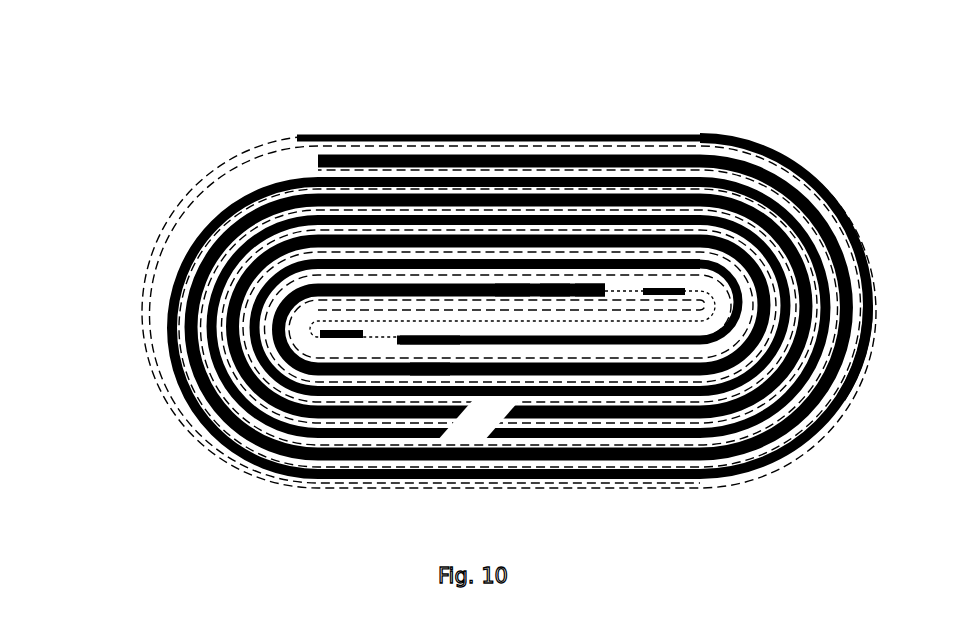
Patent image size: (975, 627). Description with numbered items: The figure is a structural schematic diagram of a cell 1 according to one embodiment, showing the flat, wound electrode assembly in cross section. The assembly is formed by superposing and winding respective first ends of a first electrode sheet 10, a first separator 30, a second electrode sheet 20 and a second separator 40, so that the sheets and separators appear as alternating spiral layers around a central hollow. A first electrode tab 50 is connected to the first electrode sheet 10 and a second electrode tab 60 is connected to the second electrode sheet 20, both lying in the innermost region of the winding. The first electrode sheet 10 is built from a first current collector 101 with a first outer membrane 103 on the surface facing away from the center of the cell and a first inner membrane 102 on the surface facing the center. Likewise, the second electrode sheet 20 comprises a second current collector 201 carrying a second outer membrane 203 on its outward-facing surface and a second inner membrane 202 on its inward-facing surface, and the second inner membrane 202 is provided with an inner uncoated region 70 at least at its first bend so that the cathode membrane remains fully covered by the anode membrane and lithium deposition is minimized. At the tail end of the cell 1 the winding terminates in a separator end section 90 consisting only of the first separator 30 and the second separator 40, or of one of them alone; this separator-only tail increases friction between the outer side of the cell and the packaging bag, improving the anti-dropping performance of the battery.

The cell 1 is at (131, 280).
The first electrode sheet 10 is at (868, 33).
The first current collector 101 is at (555, 285).
The first inner membrane 102 is at (587, 285).
The first outer membrane 103 is at (510, 287).
The second electrode sheet 20 is at (138, 462).
The second current collector 201 is at (427, 363).
The second inner membrane 202 is at (395, 390).
The second outer membrane 203 is at (437, 340).
The first separator 30 is at (427, 275).
The second separator 40 is at (395, 300).
The first electrode tab 50 is at (687, 287).
The second electrode tab 60 is at (330, 340).
The inner uncoated region 70 is at (841, 398).
The separator end section 90 is at (433, 486).